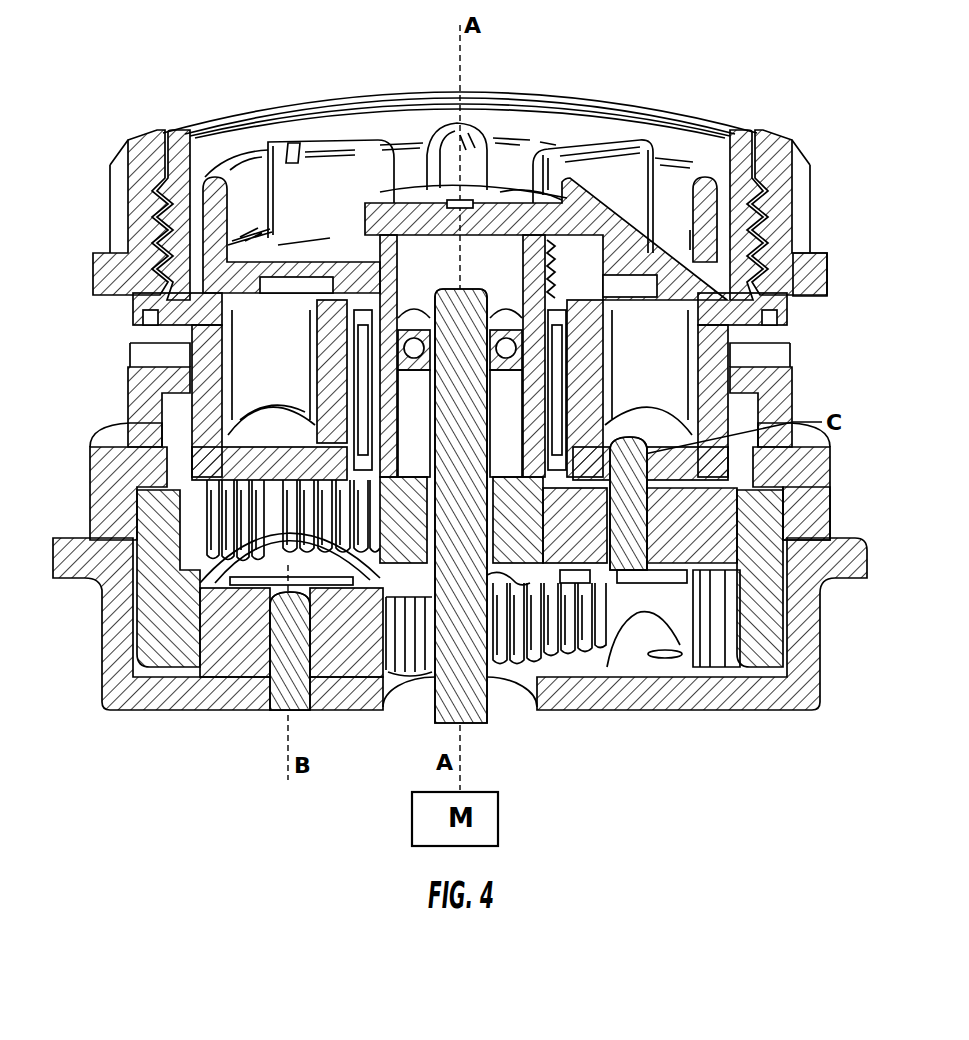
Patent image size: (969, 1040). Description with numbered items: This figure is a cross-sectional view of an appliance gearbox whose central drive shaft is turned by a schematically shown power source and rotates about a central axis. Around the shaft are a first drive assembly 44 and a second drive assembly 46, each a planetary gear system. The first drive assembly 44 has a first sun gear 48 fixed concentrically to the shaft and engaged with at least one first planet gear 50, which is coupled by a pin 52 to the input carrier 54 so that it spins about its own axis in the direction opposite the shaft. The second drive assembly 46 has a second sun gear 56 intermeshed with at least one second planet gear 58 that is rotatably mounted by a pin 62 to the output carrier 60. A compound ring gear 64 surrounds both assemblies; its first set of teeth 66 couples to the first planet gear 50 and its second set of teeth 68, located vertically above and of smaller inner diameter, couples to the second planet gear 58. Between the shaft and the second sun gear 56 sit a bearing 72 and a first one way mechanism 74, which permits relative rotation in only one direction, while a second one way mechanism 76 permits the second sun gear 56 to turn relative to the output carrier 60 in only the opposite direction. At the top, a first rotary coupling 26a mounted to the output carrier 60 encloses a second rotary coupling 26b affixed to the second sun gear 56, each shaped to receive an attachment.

The first rotary coupling 26a is at (138, 147).
The second rotary coupling 26b is at (242, 203).
The first drive assembly 44 is at (187, 645).
The second drive assembly 46 is at (272, 536).
The first sun gear 48 is at (398, 648).
The first planet gear 50 is at (223, 667).
The pin 52 is at (283, 690).
The input carrier 54 is at (717, 702).
The second sun gear 56 is at (405, 510).
The second planet gear 58 is at (712, 520).
The output carrier 60 is at (790, 262).
The pin 62 is at (807, 538).
The compound ring gear 64 is at (152, 602).
The first set of teeth 66 is at (707, 618).
The second set of teeth 68 is at (262, 500).
The bearing 72 is at (507, 318).
The first one way mechanism 74 is at (360, 378).
The second one way mechanism 76 is at (552, 413).